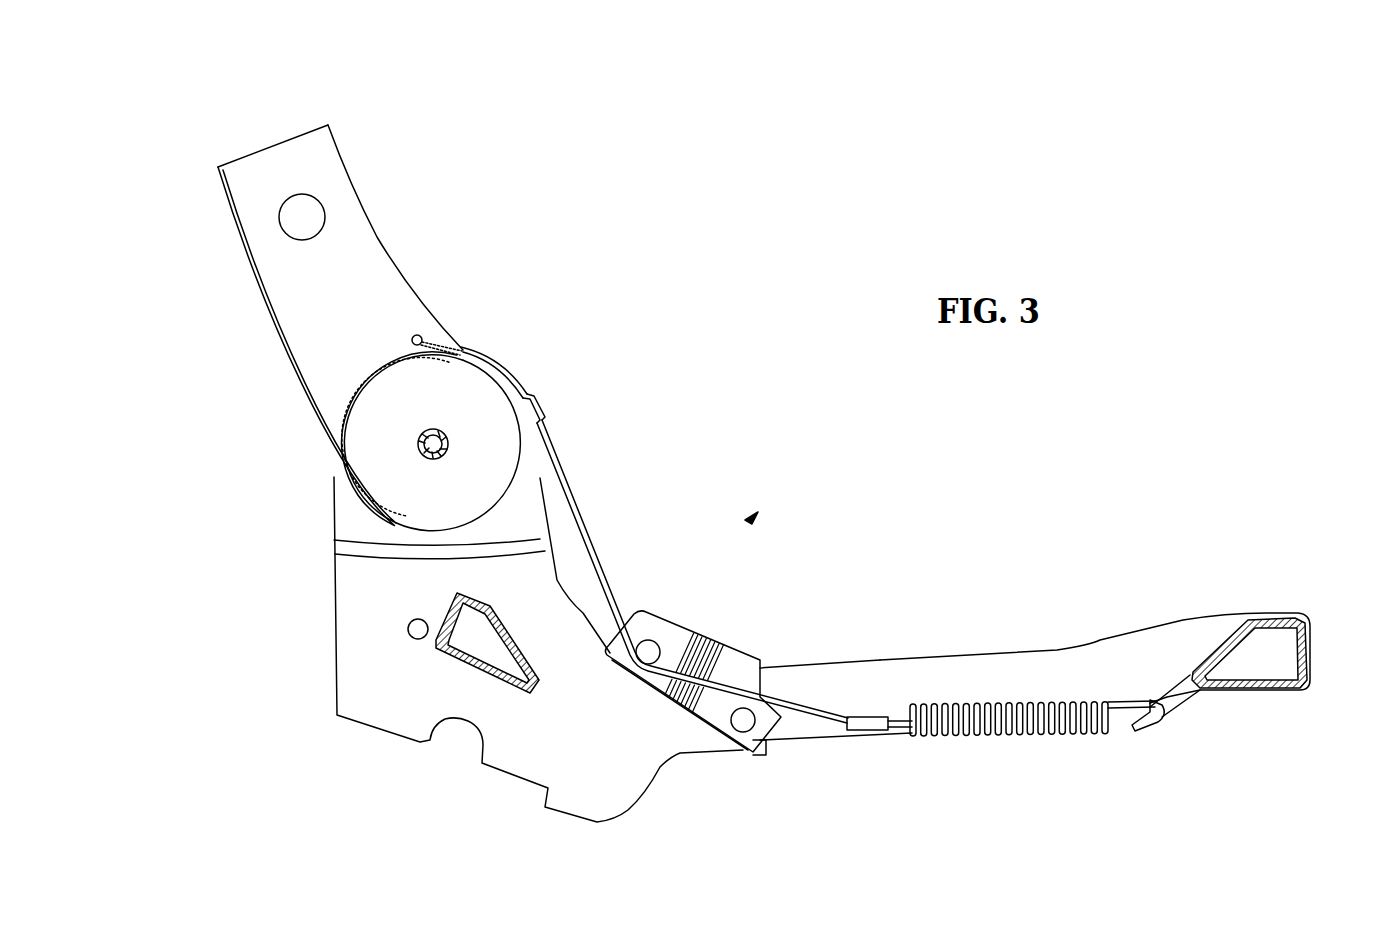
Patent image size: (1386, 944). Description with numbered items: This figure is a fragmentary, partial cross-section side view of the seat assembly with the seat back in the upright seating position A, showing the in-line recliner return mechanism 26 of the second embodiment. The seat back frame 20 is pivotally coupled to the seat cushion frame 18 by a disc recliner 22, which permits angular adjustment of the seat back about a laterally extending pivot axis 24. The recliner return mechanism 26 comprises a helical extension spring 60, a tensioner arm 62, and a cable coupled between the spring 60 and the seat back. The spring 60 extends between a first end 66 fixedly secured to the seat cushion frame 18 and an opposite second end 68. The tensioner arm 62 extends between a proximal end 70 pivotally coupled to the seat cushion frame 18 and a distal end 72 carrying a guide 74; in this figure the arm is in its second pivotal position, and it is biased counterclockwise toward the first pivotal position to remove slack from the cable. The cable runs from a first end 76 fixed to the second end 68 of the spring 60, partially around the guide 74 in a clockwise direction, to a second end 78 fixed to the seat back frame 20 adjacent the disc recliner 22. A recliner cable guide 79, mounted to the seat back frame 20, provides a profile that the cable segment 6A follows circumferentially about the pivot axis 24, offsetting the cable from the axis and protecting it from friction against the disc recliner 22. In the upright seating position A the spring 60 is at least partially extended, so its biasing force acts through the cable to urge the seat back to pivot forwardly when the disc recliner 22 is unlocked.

The upright seating position A is at (268, 143).
The seat back frame 20 is at (355, 205).
The second end of the cable 78 is at (470, 352).
The disc recliner 22 is at (500, 368).
The recliner cable guide 79 is at (528, 414).
The pivot axis 24 is at (422, 450).
The cable segment 6A is at (590, 540).
The recliner return mechanism 26 is at (752, 517).
The guide 74 is at (650, 640).
The tensioner arm 62 is at (700, 670).
The distal end of the tensioner arm 72 is at (622, 655).
The proximal end of the tensioner arm 70 is at (750, 735).
The first end of the cable 76 is at (840, 680).
The second end of the spring 68 is at (900, 732).
The helical extension spring 60 is at (1010, 740).
The first end of the spring 66 is at (1135, 738).
The seat cushion frame 18 is at (1095, 640).